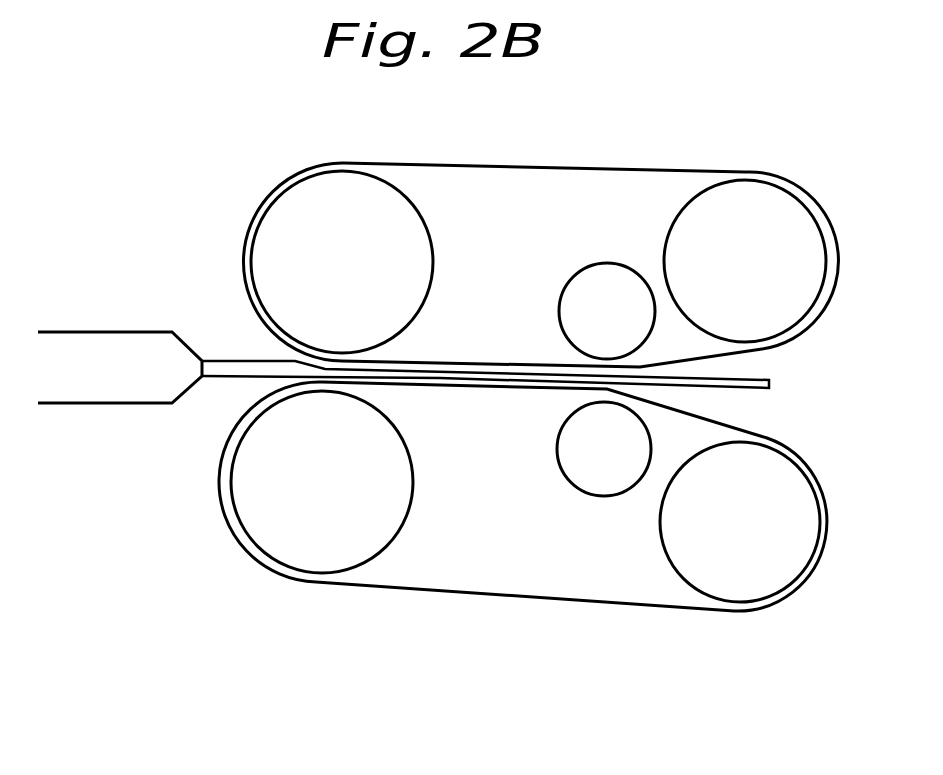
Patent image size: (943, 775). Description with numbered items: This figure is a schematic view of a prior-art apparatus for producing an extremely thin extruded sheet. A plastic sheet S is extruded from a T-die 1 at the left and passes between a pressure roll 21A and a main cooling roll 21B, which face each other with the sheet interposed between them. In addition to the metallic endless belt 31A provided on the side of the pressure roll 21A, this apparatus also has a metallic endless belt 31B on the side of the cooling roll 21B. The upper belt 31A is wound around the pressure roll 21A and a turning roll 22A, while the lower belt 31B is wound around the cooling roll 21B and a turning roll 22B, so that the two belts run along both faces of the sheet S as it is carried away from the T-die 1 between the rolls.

The T-die 1 is at (122, 331).
The plastic sheet S is at (227, 379).
The pressure roll 21A is at (367, 274).
The turning roll 22A is at (773, 280).
The main cooling roll 21B is at (348, 503).
The turning roll 22B is at (770, 543).
The metallic endless belt 31A is at (511, 169).
The metallic endless belt 31B is at (492, 390).